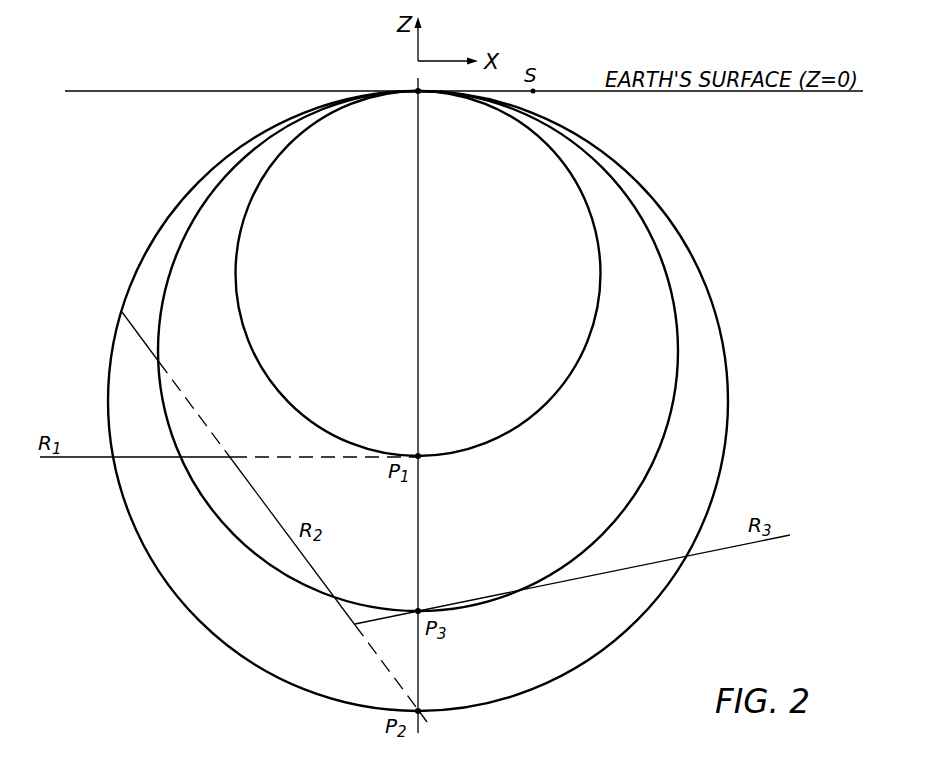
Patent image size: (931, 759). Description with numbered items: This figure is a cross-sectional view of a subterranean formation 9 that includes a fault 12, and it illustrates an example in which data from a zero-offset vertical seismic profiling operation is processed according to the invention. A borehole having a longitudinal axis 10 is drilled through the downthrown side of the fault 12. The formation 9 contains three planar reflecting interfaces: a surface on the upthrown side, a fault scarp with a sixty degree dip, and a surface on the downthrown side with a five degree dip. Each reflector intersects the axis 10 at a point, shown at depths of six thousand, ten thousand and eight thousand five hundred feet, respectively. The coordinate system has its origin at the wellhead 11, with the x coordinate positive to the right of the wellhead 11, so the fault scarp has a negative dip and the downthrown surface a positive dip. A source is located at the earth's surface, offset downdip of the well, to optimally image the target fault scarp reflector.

The subterranean formation 9 is at (178, 154).
The longitudinal axis 10 is at (419, 222).
The wellhead 11 is at (421, 94).
The fault 12 is at (256, 480).